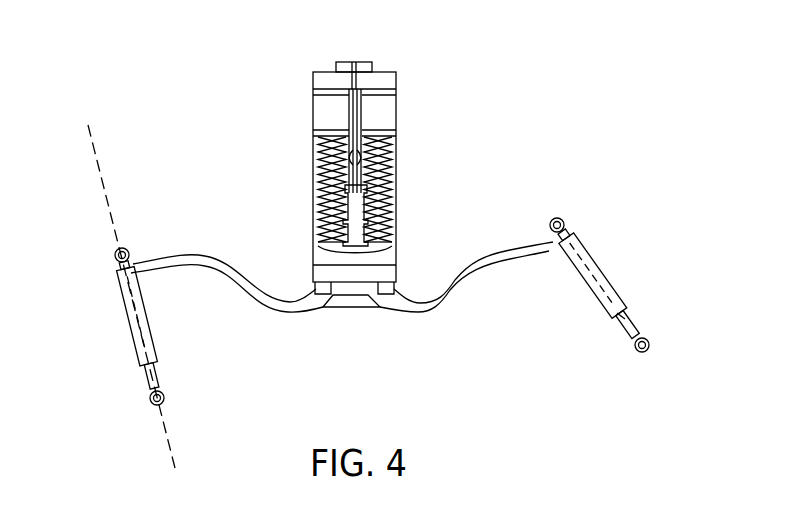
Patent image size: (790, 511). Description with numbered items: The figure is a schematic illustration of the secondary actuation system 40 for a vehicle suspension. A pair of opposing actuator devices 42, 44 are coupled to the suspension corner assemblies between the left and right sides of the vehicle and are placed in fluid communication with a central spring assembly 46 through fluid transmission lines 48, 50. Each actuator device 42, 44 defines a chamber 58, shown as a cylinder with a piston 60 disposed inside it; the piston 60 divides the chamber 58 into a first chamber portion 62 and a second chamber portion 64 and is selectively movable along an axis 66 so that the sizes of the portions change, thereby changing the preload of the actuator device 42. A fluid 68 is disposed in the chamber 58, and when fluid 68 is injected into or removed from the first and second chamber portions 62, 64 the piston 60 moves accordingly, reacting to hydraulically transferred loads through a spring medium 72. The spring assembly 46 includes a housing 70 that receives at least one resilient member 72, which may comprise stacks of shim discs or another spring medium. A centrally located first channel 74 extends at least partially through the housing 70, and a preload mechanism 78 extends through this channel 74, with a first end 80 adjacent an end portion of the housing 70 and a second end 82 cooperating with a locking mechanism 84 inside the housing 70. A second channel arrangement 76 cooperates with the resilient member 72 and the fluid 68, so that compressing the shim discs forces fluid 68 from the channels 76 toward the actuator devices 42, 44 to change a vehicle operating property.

The secondary actuation system 40 is at (535, 90).
The actuator device 42 is at (603, 320).
The actuator device 44 is at (127, 382).
The spring assembly 46 is at (312, 75).
The fluid transmission line 48 is at (510, 245).
The fluid transmission line 50 is at (193, 258).
The chamber 58 is at (128, 300).
The piston 60 is at (132, 345).
The first chamber portion 62 is at (588, 242).
The second chamber portion 64 is at (620, 315).
The axis 66 is at (97, 152).
The fluid 68 is at (351, 288).
The housing 70 is at (396, 99).
The resilient member 72 is at (397, 185).
The first channel 74 is at (348, 101).
The second channel arrangement 76 is at (366, 213).
The preload mechanism 78 is at (358, 153).
The first end 80 is at (363, 62).
The second end 82 is at (318, 206).
The locking mechanism 84 is at (320, 178).